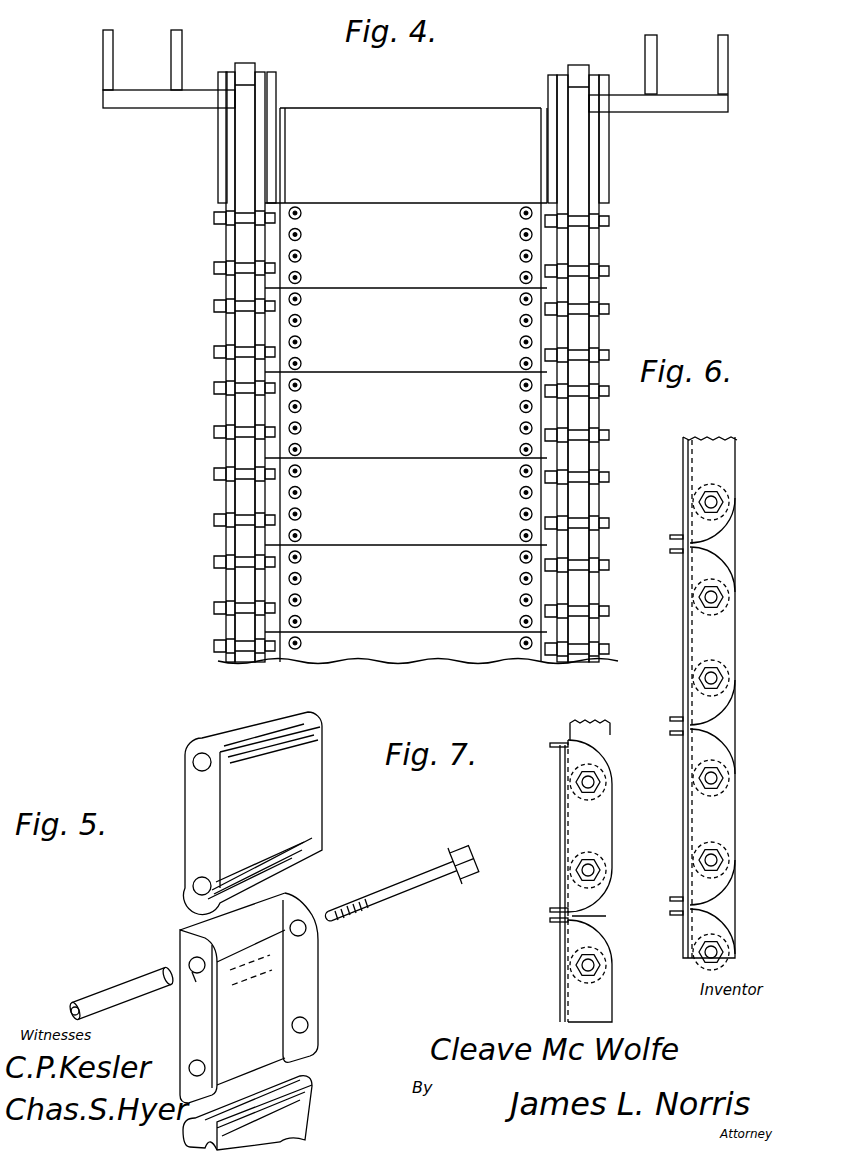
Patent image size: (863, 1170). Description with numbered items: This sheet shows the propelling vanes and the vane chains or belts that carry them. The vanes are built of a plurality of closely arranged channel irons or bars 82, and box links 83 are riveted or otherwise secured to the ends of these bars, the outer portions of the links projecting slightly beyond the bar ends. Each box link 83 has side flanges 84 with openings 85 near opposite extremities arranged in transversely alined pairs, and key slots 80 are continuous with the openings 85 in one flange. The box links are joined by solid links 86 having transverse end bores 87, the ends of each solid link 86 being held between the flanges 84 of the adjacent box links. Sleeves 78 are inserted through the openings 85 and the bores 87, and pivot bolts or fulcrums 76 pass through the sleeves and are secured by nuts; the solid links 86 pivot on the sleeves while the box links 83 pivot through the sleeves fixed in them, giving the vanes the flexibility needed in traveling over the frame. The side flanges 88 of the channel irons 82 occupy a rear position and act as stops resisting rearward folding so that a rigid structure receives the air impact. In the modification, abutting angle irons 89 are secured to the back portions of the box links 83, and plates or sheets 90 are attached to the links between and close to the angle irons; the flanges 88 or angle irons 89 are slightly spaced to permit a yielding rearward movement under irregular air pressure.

In FIG. 4, the pivot bolts or fulcrums 76 is at (275, 610).
In FIG. 6, the pivot bolts or fulcrums 76 is at (724, 597).
In FIG. 7, the pivot bolts or fulcrums 76 is at (596, 965).
In FIG. 5, the pivot bolts or fulcrums 76 is at (390, 892).
In FIG. 5, the sleeves 78 is at (108, 993).
In FIG. 5, the key slots 80 is at (195, 985).
In FIG. 4, the channel irons or bars 82 is at (350, 300).
In FIG. 6, the channel irons or bars 82 is at (684, 646).
In FIG. 4, the box links 83 is at (242, 583).
In FIG. 7, the box links 83 is at (633, 835).
In FIG. 5, the box links 83 is at (232, 989).
In FIG. 4, the side flanges 84 is at (265, 493).
In FIG. 6, the side flanges 84 is at (725, 641).
In FIG. 5, the side flanges 84 is at (188, 1013).
In FIG. 5, the openings 85 is at (192, 958).
In FIG. 4, the solid links 86 is at (242, 455).
In FIG. 7, the solid links 86 is at (595, 914).
In FIG. 5, the solid links 86 is at (302, 820).
In FIG. 5, the transverse end bores 87 is at (192, 760).
In FIG. 6, the side flanges 88 is at (675, 746).
In FIG. 7, the abutting angle irons 89 is at (559, 756).
In FIG. 7, the plates or sheets 90 is at (565, 826).